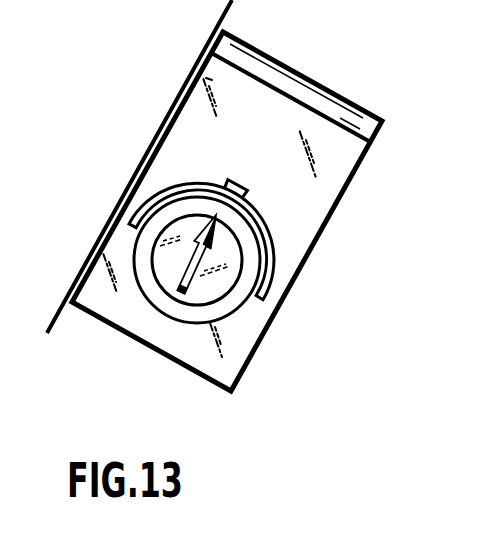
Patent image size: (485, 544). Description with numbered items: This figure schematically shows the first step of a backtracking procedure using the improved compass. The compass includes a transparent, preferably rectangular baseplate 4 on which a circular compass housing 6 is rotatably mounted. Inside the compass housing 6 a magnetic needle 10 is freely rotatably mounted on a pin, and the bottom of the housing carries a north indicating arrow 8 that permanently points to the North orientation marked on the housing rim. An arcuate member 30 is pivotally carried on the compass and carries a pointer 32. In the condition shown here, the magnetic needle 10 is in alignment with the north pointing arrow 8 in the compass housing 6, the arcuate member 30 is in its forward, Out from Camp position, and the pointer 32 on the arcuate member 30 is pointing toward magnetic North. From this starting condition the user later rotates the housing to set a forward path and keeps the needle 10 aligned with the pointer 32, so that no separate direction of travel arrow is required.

The baseplate 4 is at (345, 168).
The compass housing 6 is at (207, 288).
The north indicating arrow 8 is at (172, 266).
The magnetic needle 10 is at (257, 234).
The arcuate member 30 is at (143, 200).
The pointer 32 is at (243, 182).